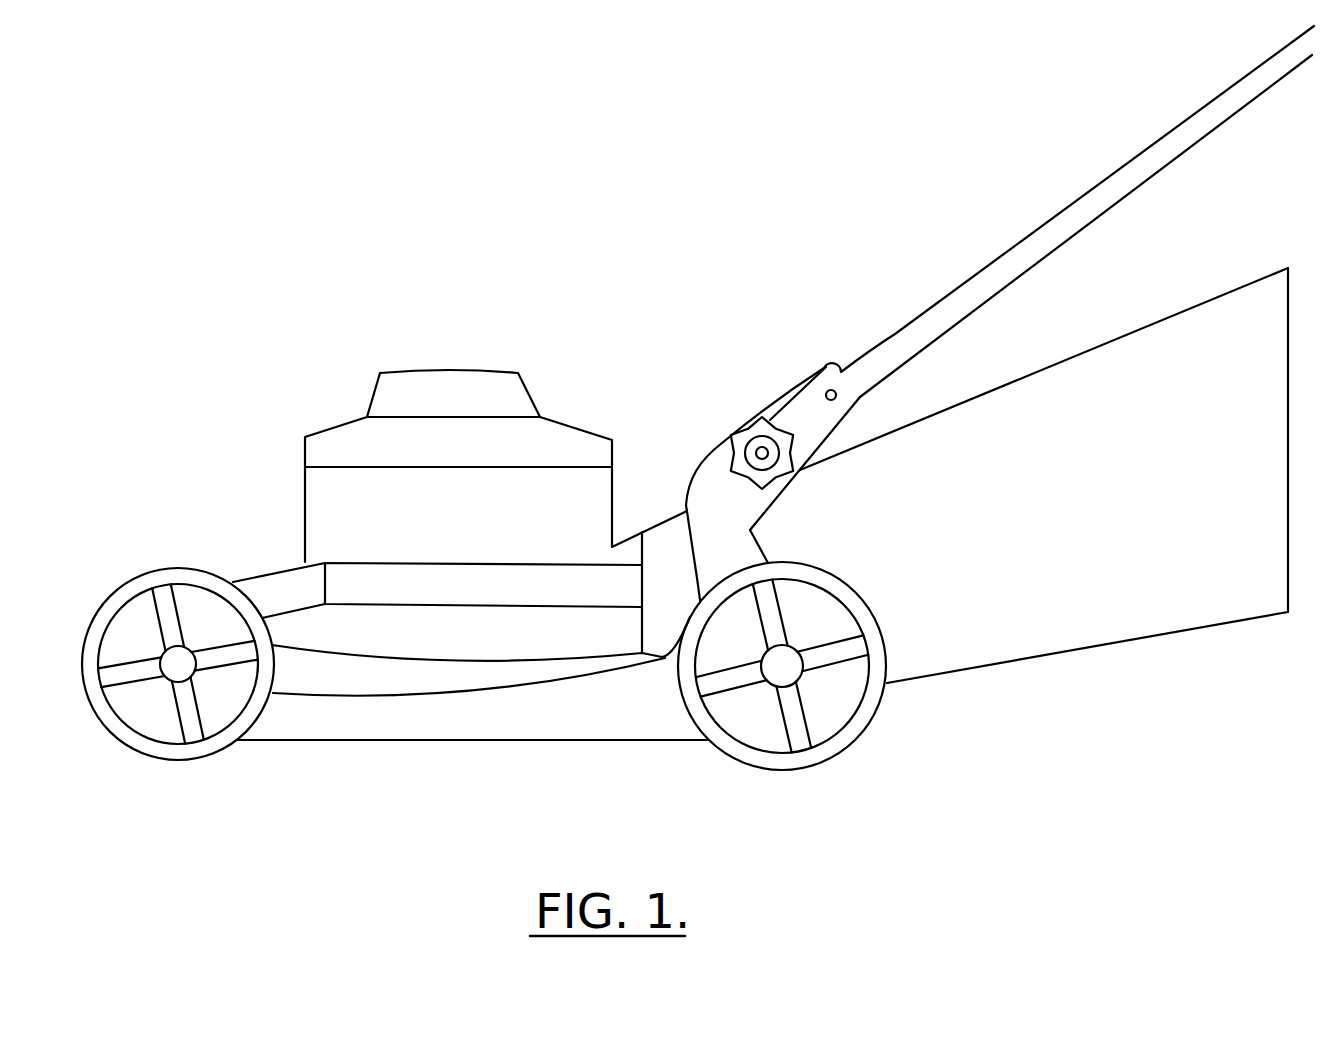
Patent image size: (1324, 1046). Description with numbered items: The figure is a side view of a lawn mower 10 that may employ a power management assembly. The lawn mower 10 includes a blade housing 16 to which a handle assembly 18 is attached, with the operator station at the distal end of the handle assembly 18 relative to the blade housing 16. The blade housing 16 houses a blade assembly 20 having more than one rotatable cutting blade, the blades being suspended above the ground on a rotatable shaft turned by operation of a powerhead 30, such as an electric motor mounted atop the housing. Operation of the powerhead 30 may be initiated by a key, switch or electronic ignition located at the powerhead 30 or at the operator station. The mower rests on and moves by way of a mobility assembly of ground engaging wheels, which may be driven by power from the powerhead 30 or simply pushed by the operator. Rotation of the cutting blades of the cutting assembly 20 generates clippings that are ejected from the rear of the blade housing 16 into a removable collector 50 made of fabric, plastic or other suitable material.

The lawn mower 10 is at (176, 177).
The blade housing 16 is at (443, 722).
The handle assembly 18 is at (1076, 239).
The blade assembly 20 is at (450, 766).
The powerhead 30 is at (385, 455).
The collector 50 is at (1103, 625).